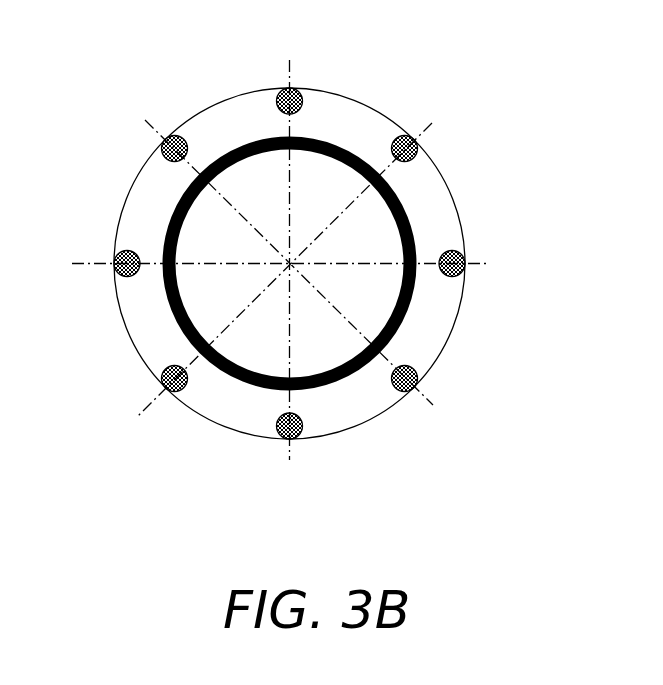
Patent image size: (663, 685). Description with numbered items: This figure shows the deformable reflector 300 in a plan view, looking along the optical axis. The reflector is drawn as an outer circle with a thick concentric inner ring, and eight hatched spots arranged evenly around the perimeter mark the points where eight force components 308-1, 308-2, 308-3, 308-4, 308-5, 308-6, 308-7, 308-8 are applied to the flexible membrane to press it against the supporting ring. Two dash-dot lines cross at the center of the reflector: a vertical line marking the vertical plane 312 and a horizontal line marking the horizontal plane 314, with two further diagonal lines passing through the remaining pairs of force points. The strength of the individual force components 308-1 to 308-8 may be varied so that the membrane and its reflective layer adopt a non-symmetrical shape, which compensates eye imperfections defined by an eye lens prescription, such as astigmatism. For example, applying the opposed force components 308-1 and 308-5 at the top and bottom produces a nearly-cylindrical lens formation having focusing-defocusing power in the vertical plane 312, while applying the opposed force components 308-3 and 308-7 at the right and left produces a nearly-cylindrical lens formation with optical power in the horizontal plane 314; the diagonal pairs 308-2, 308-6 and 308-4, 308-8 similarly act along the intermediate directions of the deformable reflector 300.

The deformable reflector 300 is at (508, 92).
The vertical plane 312 is at (291, 208).
The horizontal plane 314 is at (198, 263).
The force component 308-1 is at (285, 88).
The force component 308-2 is at (405, 136).
The force component 308-3 is at (466, 256).
The force component 308-4 is at (415, 387).
The force component 308-5 is at (293, 441).
The force component 308-6 is at (172, 393).
The force component 308-7 is at (112, 275).
The force component 308-8 is at (162, 148).